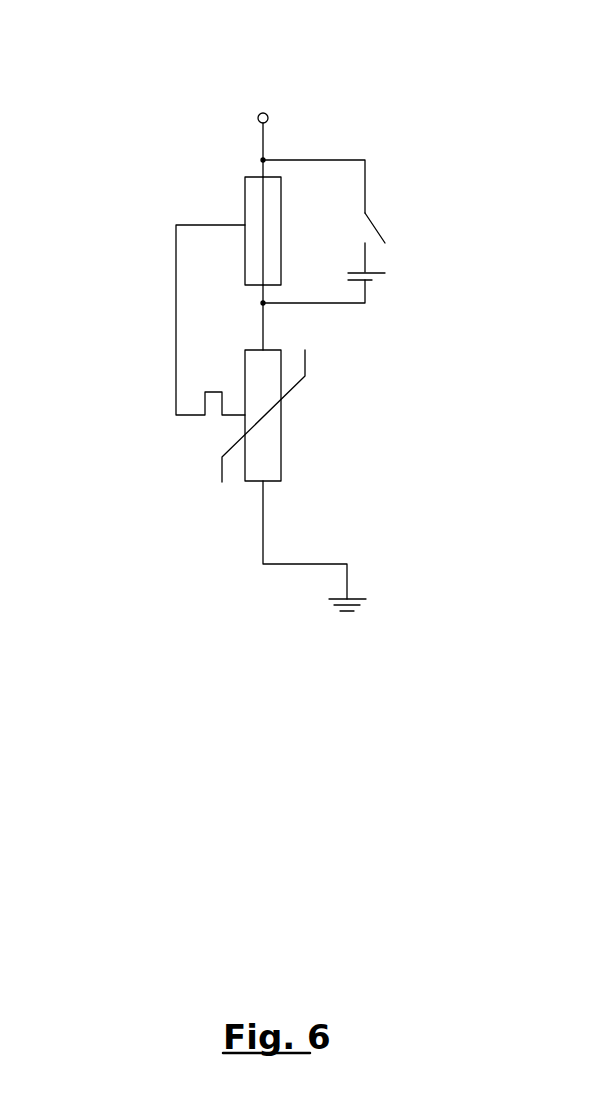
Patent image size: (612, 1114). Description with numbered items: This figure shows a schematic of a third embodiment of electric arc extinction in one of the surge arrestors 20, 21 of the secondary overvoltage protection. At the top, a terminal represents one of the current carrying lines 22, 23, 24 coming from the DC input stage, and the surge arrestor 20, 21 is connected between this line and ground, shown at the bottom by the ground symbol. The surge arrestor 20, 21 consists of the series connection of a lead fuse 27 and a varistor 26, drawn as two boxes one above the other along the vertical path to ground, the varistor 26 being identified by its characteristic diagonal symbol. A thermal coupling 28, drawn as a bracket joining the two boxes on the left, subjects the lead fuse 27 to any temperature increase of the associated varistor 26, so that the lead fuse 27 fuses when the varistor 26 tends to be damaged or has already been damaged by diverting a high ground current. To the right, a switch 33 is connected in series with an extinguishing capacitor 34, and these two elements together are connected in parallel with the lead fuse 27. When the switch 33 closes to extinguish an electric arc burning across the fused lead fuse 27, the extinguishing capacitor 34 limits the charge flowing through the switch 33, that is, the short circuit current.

The surge arrestor 20 is at (417, 321).
The surge arrestor 21 is at (367, 137).
The combined current carrying line 22 is at (259, 66).
The current carrying line 23 is at (259, 66).
The current carrying line 24 is at (263, 112).
The varistor 26 is at (281, 470).
The lead fuse 27 is at (249, 198).
The thermal coupling 28 is at (161, 313).
The switch 33 is at (396, 217).
The extinguishing capacitor 34 is at (372, 280).